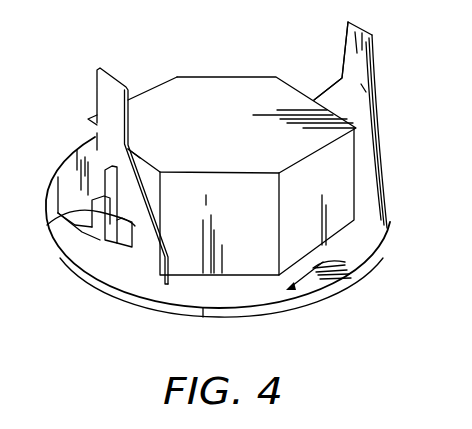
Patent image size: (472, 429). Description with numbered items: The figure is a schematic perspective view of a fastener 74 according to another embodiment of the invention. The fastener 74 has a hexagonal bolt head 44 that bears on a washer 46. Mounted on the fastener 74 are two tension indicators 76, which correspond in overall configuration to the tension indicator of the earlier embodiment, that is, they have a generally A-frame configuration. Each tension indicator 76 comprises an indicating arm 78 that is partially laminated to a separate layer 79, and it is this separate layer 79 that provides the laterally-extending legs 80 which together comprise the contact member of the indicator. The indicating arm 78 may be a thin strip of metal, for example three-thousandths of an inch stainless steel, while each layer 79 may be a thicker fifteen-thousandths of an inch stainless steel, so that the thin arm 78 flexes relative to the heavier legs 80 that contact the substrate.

The hexagonal bolt head 44 is at (210, 77).
The washer 46 is at (345, 262).
The fastener 74 is at (316, 74).
The tension indicators 76 is at (90, 103).
The indicating arm 78 is at (51, 229).
The separate layer 79 is at (128, 152).
The laterally-extending legs 80 is at (126, 262).